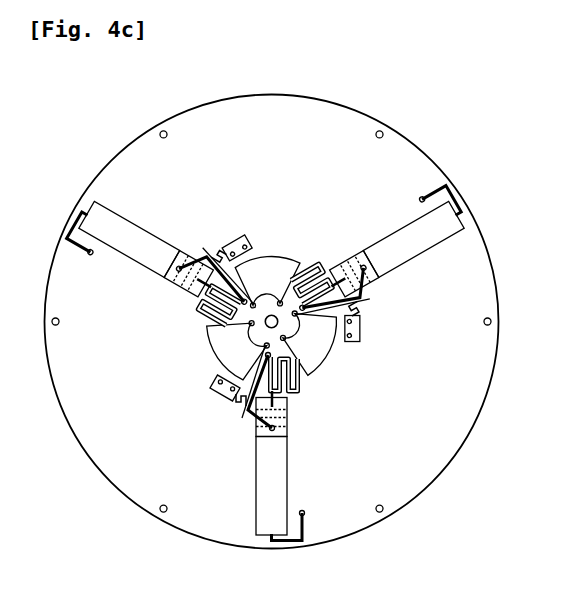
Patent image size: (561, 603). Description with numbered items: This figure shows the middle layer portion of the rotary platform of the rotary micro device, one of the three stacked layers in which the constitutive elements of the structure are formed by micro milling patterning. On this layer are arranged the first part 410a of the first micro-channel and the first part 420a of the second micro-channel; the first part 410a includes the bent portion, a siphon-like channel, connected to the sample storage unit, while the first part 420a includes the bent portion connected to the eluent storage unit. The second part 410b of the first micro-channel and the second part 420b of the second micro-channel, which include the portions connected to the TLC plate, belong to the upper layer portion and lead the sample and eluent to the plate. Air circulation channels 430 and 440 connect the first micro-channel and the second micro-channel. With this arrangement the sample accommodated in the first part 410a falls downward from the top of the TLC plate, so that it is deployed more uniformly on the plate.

The first part of the first micro-channel 410a is at (365, 315).
The second part of the first micro-channel 410b is at (365, 277).
The first part of the second micro-channel 420a is at (305, 270).
The second part of the second micro-channel 420b is at (333, 273).
The air circulation channel 430 is at (339, 336).
The air circulation channel 440 is at (437, 187).